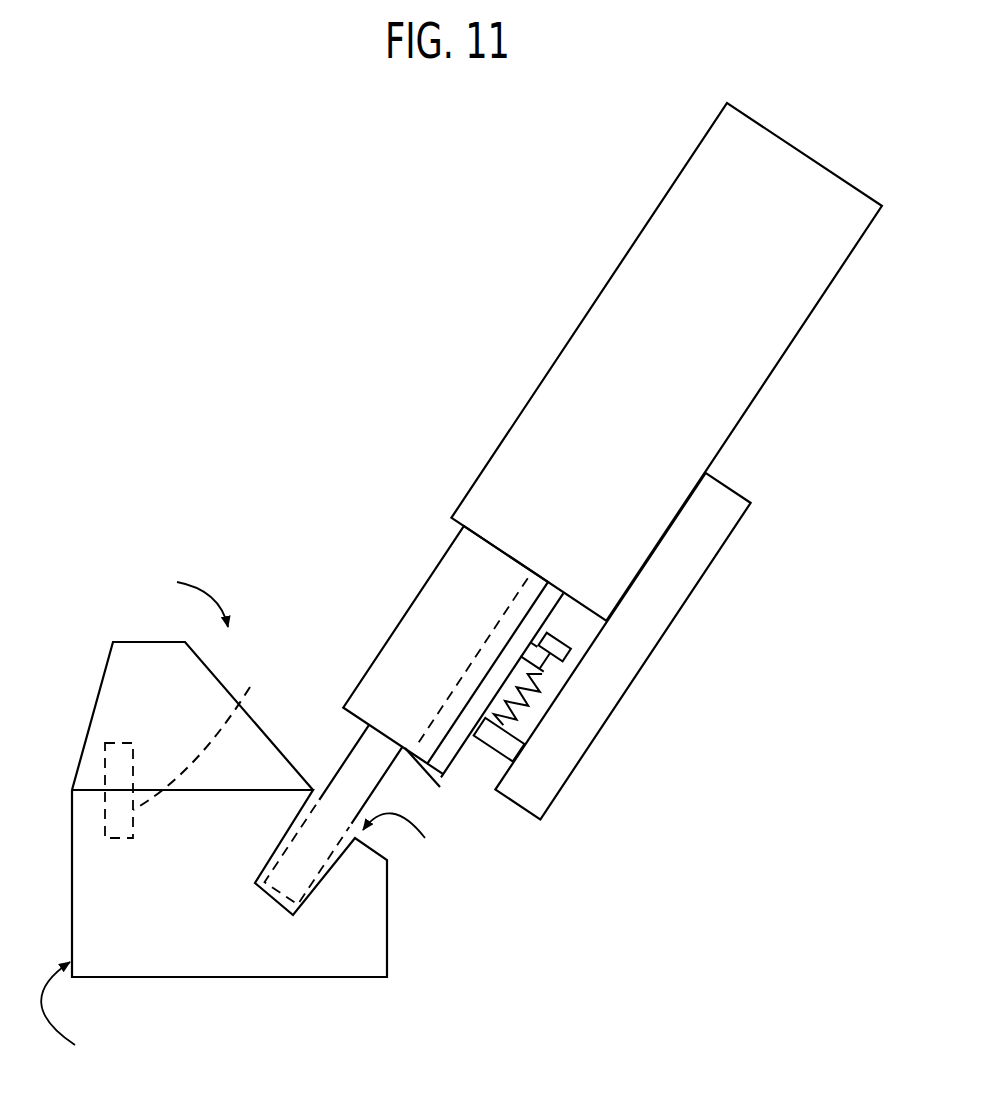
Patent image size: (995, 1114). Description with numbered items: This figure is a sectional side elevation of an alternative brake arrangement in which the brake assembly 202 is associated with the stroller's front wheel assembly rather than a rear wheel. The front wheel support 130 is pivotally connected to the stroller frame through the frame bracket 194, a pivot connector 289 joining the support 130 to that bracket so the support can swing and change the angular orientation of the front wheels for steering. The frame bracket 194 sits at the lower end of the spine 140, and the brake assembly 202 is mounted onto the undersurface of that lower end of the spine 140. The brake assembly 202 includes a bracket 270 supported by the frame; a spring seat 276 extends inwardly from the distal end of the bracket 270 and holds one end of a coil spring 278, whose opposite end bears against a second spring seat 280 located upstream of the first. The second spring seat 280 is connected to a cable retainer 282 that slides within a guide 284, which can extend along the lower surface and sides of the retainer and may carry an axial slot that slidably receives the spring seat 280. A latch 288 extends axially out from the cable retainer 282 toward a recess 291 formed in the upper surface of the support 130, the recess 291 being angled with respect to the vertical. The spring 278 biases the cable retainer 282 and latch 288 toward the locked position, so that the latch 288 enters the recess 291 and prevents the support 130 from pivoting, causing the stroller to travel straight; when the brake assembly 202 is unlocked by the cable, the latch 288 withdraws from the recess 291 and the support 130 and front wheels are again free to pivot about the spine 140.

The support 130 is at (214, 926).
The spine 140 is at (625, 252).
The frame bracket 194 is at (105, 675).
The brake assembly 202 is at (180, 596).
The bracket 270 is at (712, 567).
The spring seat 276 is at (493, 753).
The coil spring 278 is at (530, 693).
The second spring seat 280 is at (568, 657).
The cable retainer 282 is at (411, 607).
The guide 284 is at (437, 787).
The latch 288 is at (352, 757).
The pivot connector 289 is at (188, 747).
The recess 291 is at (356, 855).